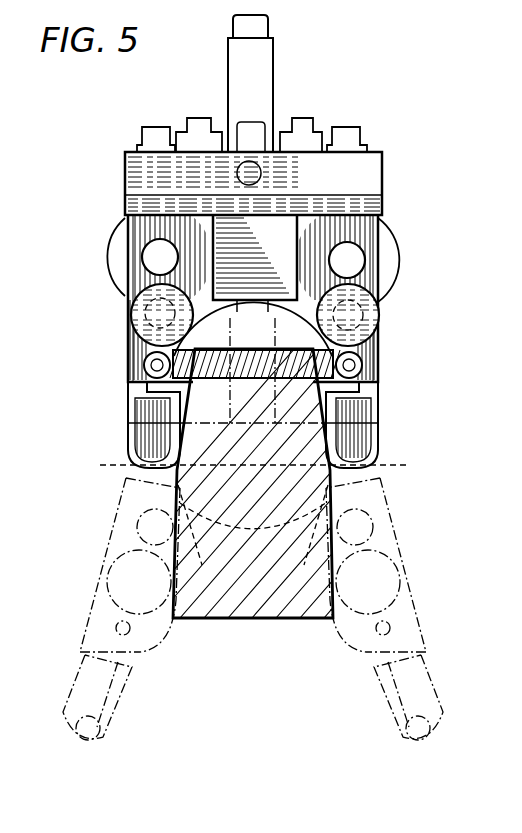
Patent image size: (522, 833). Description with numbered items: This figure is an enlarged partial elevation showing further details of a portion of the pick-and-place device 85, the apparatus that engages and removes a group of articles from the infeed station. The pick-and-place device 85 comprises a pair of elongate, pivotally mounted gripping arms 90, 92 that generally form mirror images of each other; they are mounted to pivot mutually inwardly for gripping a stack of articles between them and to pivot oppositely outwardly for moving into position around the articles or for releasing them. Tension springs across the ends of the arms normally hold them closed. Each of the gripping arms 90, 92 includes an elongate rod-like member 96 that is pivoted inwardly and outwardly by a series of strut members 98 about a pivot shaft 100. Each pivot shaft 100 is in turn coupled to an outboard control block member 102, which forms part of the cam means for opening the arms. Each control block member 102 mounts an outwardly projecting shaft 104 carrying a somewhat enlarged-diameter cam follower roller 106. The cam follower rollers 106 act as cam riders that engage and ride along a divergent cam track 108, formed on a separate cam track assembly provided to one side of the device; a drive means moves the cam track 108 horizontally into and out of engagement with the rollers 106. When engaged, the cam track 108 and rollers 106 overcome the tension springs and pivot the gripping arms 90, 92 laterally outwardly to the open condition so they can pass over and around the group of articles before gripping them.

The pick-and-place device 85 is at (88, 222).
The gripping arm 90 is at (125, 432).
The gripping arm 92 is at (380, 432).
The rod-like member 96 is at (123, 481).
The strut member 98 is at (143, 384).
The pivot shaft 100 is at (158, 257).
The control block member 102 is at (123, 224).
The outwardly projecting shaft 104 is at (120, 323).
The cam follower roller 106 is at (130, 298).
The cam track 108 is at (256, 618).